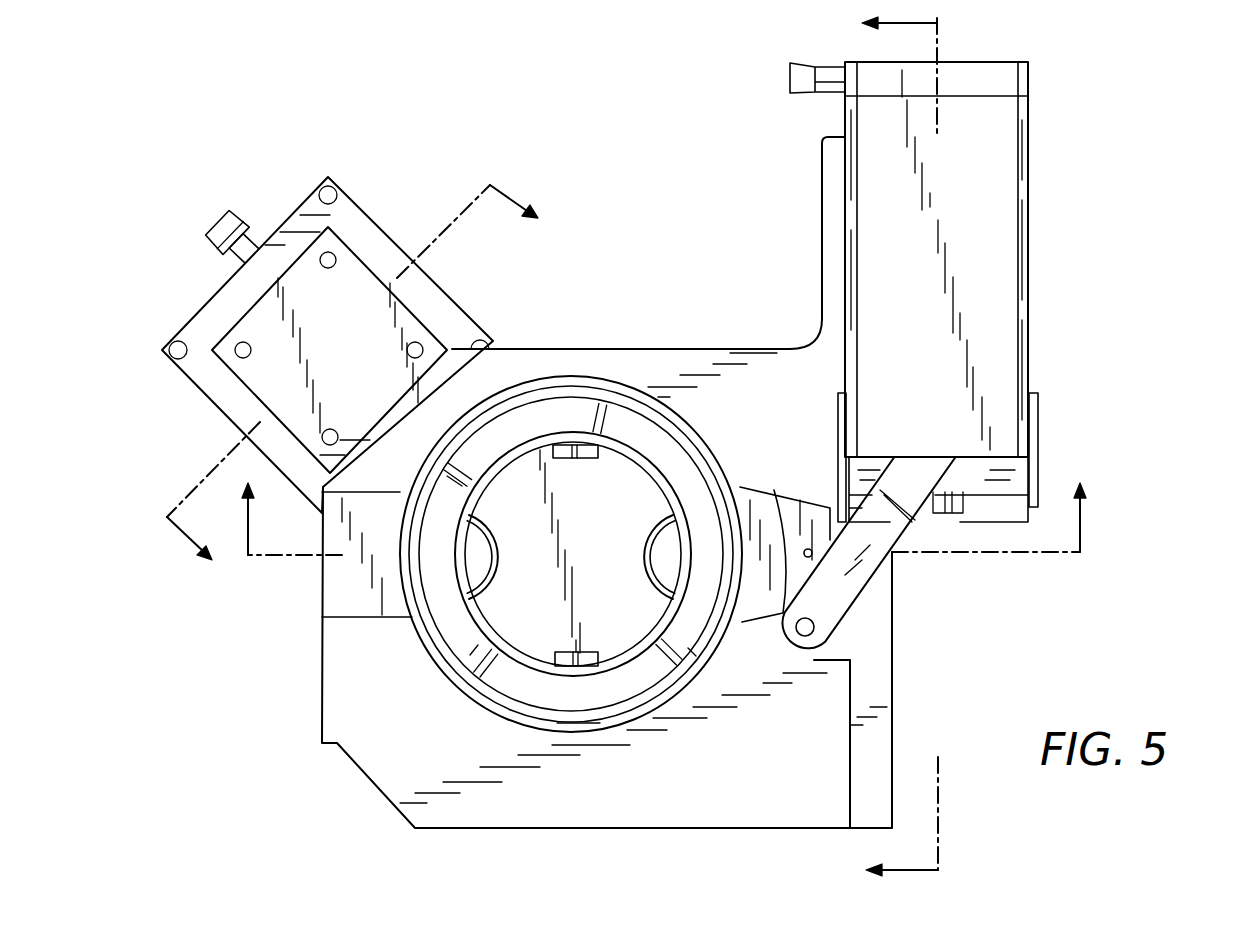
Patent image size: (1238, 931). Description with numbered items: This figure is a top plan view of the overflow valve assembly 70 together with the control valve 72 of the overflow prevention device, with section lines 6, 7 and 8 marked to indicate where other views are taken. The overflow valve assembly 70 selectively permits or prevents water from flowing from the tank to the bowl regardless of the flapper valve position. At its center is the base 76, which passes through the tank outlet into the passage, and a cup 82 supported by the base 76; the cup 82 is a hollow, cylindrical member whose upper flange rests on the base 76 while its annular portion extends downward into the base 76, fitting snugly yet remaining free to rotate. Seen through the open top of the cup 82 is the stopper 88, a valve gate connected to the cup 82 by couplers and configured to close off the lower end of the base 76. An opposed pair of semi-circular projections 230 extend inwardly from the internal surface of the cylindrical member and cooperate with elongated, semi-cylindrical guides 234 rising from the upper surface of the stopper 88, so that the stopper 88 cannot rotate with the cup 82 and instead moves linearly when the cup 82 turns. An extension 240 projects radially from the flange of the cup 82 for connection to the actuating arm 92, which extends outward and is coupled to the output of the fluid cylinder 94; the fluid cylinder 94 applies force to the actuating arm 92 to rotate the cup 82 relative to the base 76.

The overflow valve assembly 70 is at (1052, 400).
The control valve 72 is at (378, 207).
The base 76 is at (703, 347).
The cup 82 is at (680, 447).
The stopper 88 is at (612, 499).
The actuating arm 92 is at (868, 568).
The fluid cylinder 94 is at (1037, 215).
The semi-circular projections 230 is at (484, 545).
The semi-cylindrical guides 234 is at (647, 540).
The extension 240 is at (810, 500).
The section line 6- 6 is at (660, 519).
The section line 7- 7 is at (900, 446).
The section line 8- 8 is at (358, 386).